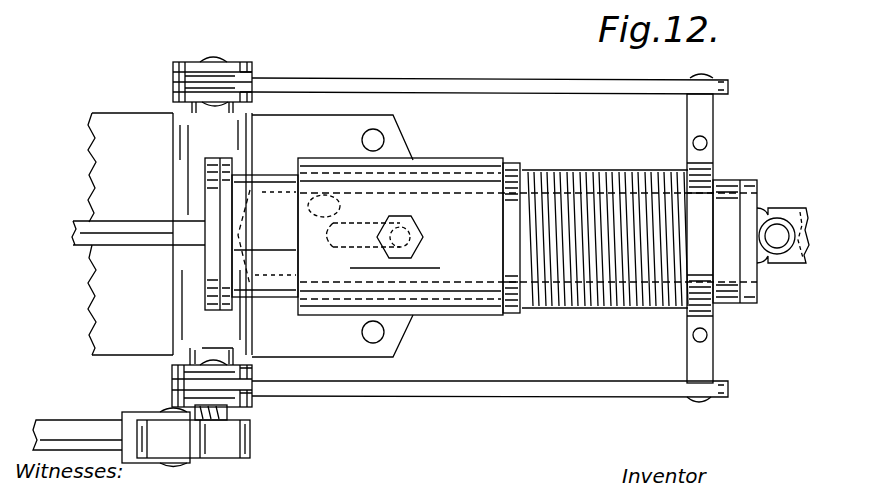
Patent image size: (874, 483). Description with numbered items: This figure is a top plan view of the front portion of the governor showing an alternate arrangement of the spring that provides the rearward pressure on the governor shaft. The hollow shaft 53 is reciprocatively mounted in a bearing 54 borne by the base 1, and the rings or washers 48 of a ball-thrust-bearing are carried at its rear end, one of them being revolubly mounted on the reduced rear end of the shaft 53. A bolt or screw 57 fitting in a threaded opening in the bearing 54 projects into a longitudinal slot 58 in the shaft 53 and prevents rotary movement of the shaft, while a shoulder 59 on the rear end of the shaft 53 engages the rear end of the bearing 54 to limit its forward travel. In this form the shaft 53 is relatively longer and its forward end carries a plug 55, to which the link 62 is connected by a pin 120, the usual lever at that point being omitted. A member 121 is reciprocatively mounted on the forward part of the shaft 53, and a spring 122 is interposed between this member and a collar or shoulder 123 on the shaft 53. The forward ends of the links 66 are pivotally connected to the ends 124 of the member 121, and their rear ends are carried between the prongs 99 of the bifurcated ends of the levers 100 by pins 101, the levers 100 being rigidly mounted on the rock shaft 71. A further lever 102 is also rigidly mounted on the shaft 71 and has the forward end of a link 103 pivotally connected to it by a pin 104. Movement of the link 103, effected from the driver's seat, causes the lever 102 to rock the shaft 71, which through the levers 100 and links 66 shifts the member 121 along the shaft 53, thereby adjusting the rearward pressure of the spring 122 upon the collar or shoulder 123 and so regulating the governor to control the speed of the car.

The base 1 is at (107, 167).
The rings or washers 48 is at (208, 273).
The shaft 53 is at (265, 236).
The bearing 54 is at (527, 236).
The plug 55 is at (750, 180).
The bolt or screw 57 is at (420, 242).
The longitudinal slot 58 is at (345, 242).
The shoulder 59 is at (232, 170).
The link 62 is at (797, 264).
The links 66 is at (458, 80).
The shaft 71 is at (230, 413).
The prongs 99 is at (240, 91).
The levers 100 is at (173, 88).
The pins 101 is at (213, 58).
The lever 102 is at (185, 440).
The link 103 is at (55, 428).
The pin 104 is at (170, 410).
The pin 120 is at (777, 232).
The member 121 is at (713, 320).
The spring 122 is at (585, 168).
The collar or shoulder 123 is at (512, 313).
The ends 124 is at (705, 77).